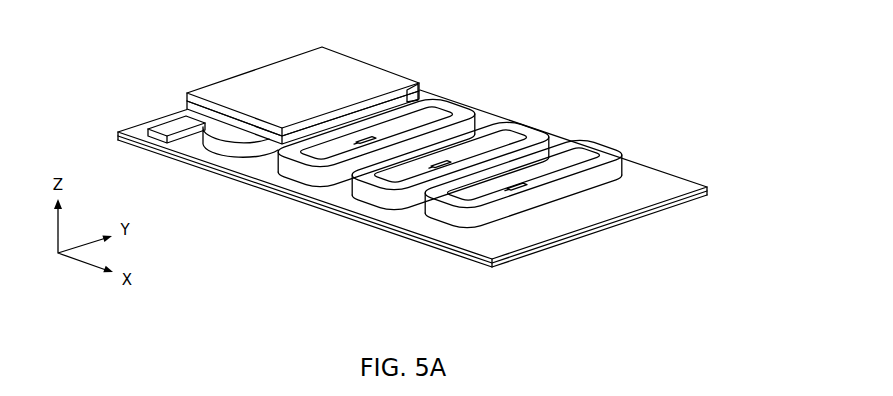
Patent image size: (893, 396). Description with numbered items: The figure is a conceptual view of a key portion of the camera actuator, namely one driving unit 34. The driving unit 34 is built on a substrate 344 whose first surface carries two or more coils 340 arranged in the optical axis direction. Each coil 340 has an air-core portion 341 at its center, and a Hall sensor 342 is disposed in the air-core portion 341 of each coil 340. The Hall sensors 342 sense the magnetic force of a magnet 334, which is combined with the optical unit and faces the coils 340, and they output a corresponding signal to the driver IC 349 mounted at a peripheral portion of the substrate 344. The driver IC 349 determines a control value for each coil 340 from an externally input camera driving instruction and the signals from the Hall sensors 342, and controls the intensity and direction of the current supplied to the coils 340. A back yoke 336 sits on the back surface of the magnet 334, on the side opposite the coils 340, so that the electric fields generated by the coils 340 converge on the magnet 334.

The driving unit 34 is at (640, 232).
The magnet 334 is at (183, 105).
The back yoke 336 is at (240, 82).
The coil 340 is at (418, 213).
The air-core portion 341 is at (567, 172).
The Hall sensor 342 is at (512, 187).
The substrate 344 is at (655, 182).
The driver IC 349 is at (160, 126).